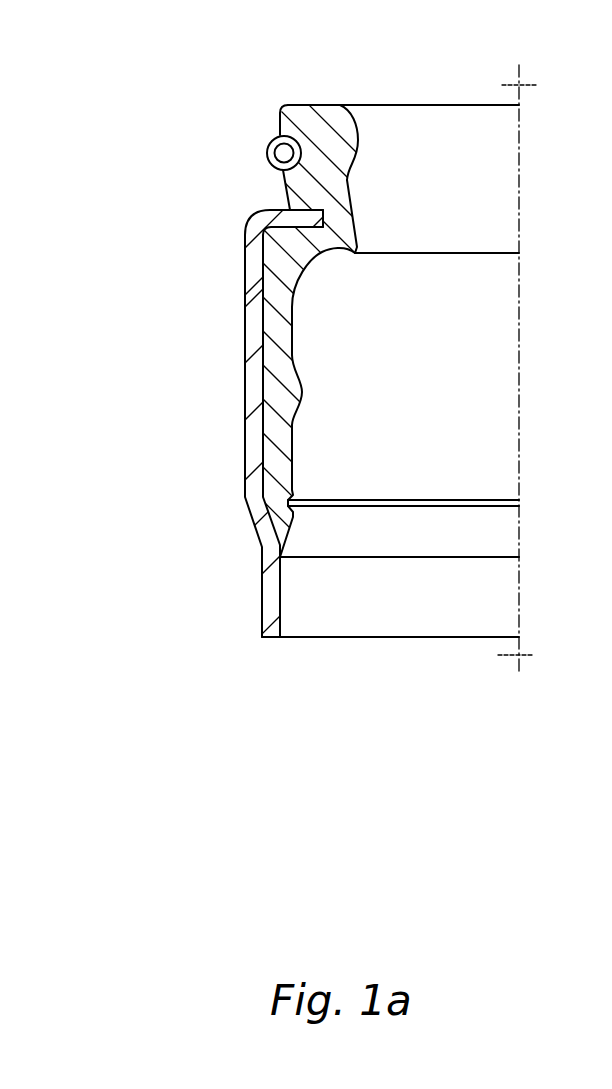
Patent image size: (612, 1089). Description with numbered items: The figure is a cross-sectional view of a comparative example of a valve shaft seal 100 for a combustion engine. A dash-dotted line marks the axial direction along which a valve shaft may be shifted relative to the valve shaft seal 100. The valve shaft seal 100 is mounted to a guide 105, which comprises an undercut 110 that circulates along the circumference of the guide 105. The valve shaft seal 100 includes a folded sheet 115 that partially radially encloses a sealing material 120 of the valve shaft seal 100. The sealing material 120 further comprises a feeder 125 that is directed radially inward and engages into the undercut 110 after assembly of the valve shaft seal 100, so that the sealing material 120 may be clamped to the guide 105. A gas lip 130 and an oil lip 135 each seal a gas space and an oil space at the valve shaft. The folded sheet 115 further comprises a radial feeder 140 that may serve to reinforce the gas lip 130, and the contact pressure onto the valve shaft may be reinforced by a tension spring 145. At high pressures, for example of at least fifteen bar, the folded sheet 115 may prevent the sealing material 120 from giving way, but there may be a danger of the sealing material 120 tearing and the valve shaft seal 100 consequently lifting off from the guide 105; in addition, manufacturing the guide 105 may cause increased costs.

The valve shaft seal 100 is at (95, 190).
The guide 105 is at (397, 637).
The undercut 110 is at (300, 378).
The folded sheet 115 is at (247, 437).
The sealing material 120 is at (283, 273).
The feeder 125 is at (293, 422).
The gas lip 130 is at (358, 250).
The oil lip 135 is at (358, 135).
The radial feeder 140 is at (290, 213).
The tension spring 145 is at (277, 133).